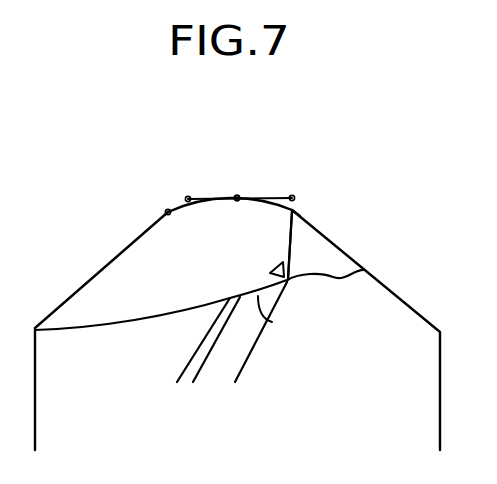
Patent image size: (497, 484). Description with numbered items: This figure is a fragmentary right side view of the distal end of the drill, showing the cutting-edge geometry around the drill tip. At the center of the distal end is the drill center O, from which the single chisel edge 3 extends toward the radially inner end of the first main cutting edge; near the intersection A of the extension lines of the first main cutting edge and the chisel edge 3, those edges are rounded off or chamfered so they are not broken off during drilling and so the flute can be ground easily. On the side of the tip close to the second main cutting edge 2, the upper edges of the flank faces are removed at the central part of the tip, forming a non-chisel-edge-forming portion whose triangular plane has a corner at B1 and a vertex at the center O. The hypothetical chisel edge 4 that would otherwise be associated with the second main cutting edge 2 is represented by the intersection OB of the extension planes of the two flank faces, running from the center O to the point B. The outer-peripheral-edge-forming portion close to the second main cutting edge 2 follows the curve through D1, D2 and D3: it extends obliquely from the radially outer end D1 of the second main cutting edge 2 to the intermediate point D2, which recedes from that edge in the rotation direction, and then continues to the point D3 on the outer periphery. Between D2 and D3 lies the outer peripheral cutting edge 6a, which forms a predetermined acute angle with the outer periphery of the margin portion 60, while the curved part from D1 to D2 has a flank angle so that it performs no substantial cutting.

The second main cutting edge 2 is at (292, 233).
The chisel edge 3 is at (207, 201).
The hypothetical chisel edge 4 is at (273, 198).
The margin portion 60 is at (272, 322).
The outer peripheral cutting edge 6a is at (365, 270).
The intersection of extension lines of first main cutting edge and chisel edge A is at (177, 192).
The center of the distal end of the drill O is at (244, 184).
The end point of hypothetical chisel edge B is at (298, 183).
The corner of non-chisel-edge-forming portion B1 is at (297, 208).
The radially outer end of the second main cutting edge D1 is at (308, 245).
The intermediate point D2 is at (274, 274).
The point on the outer periphery of the drill D3 is at (288, 308).